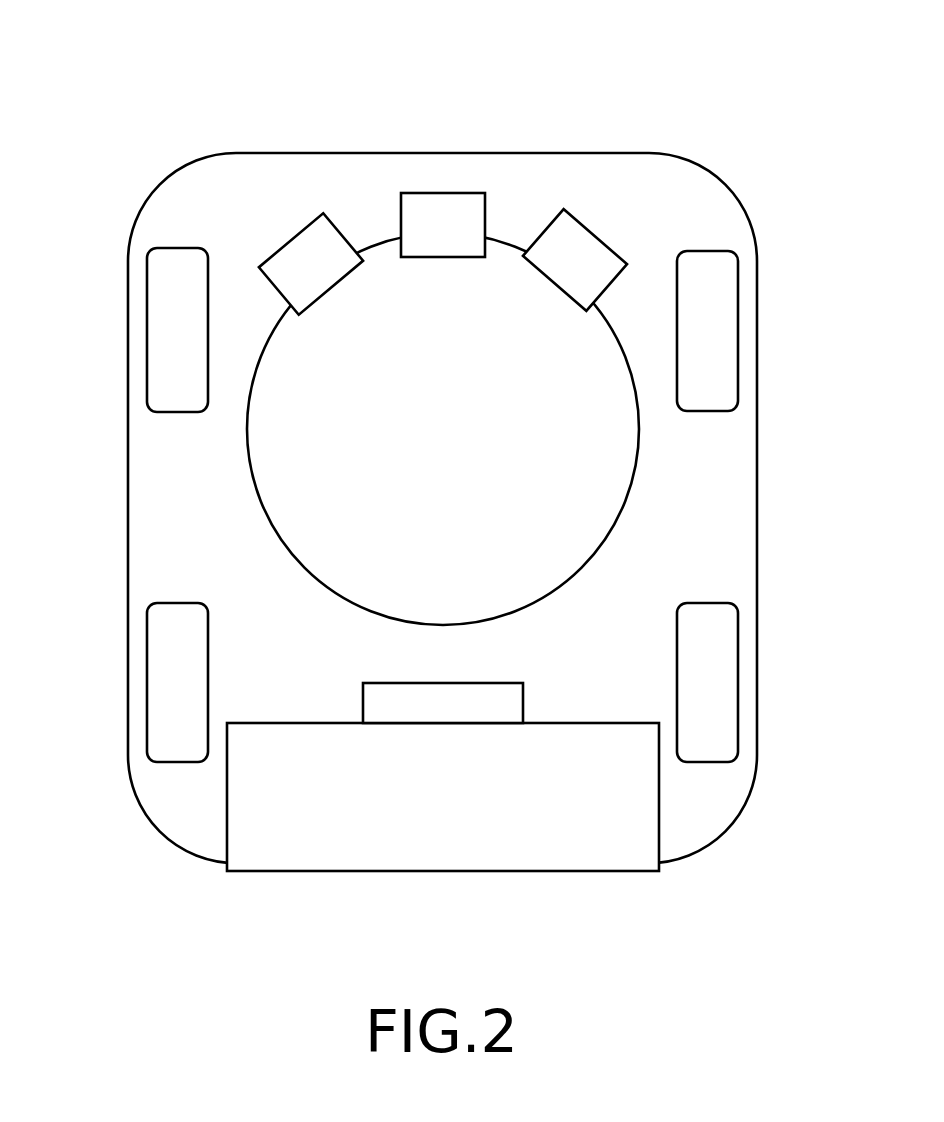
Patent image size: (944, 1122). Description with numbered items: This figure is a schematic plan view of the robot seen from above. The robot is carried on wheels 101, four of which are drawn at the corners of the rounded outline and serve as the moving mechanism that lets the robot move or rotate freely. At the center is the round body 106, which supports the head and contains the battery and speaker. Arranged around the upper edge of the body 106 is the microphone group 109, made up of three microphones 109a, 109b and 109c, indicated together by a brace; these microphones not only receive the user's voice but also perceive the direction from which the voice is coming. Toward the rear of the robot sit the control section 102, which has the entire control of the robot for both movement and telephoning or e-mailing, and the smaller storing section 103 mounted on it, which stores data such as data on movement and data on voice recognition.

The wheels 101 is at (168, 313).
The control section 102 is at (643, 835).
The storing section 103 is at (503, 702).
The body 106 is at (600, 457).
The microphone group 109 is at (432, 166).
The microphone 109a is at (317, 248).
The microphone 109b is at (445, 213).
The microphone 109c is at (575, 194).